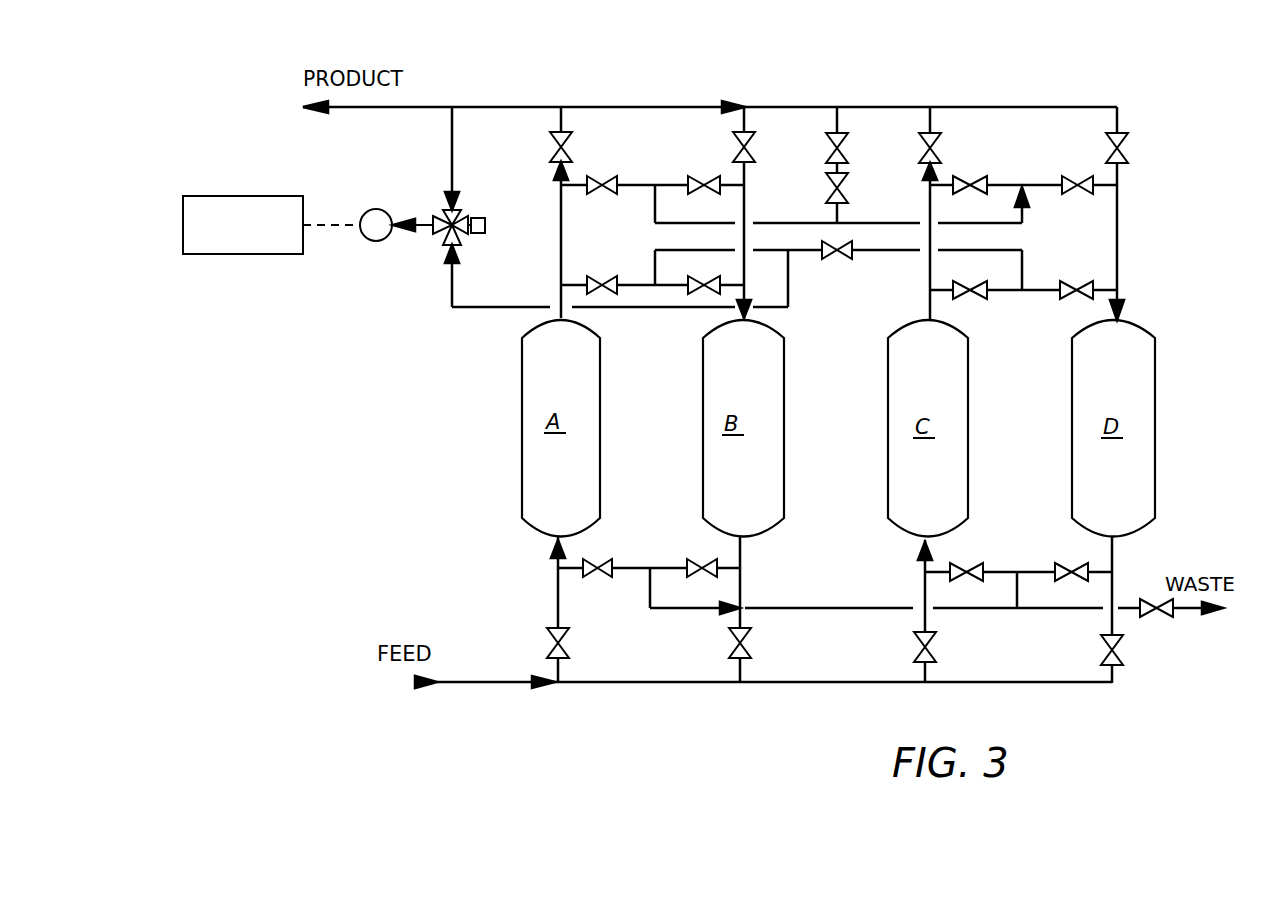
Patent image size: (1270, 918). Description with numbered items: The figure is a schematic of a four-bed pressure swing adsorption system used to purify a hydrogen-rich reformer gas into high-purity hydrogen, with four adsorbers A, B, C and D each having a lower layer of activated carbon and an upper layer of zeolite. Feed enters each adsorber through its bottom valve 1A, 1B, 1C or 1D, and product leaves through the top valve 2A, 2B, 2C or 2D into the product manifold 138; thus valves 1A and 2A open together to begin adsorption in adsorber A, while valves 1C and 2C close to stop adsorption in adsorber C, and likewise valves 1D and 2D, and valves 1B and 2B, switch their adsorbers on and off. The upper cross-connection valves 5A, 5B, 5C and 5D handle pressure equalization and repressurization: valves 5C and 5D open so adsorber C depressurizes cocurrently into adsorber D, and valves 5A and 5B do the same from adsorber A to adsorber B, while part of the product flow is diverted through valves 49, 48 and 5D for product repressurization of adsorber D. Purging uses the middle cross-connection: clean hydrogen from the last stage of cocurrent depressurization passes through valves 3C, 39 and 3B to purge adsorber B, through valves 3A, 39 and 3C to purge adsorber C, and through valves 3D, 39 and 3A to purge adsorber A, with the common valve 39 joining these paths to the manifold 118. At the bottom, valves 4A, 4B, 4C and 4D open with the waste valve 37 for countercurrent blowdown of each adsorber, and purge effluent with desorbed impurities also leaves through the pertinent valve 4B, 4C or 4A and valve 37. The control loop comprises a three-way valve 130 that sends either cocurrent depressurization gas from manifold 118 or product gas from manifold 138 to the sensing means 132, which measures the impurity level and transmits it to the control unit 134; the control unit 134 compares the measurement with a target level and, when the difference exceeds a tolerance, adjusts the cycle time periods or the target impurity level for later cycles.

The manifold 138 is at (436, 106).
The control unit 134 is at (287, 196).
The sensing means 132 is at (375, 209).
The 3-way valve 130 is at (460, 211).
The manifold 118 is at (797, 252).
The valve 2A is at (551, 146).
The valve 2B is at (755, 145).
The valve 2C is at (942, 152).
The valve 2D is at (1130, 153).
The valve 5A is at (602, 178).
The valve 5B is at (705, 177).
The valve 5C is at (970, 178).
The valve 5D is at (1078, 178).
The valve 3A is at (600, 278).
The valve 3B is at (715, 278).
The valve 3C is at (978, 272).
The valve 3D is at (1075, 282).
The valve 4A is at (598, 560).
The valve 4B is at (700, 560).
The valve 4C is at (970, 566).
The valve 4D is at (1060, 565).
The valve 1A is at (572, 648).
The valve 1B is at (752, 648).
The valve 1C is at (913, 643).
The valve 1D is at (1121, 655).
The valve 39 is at (852, 256).
The valve 48 is at (848, 188).
The valve 49 is at (848, 143).
The valve 37 is at (1165, 620).